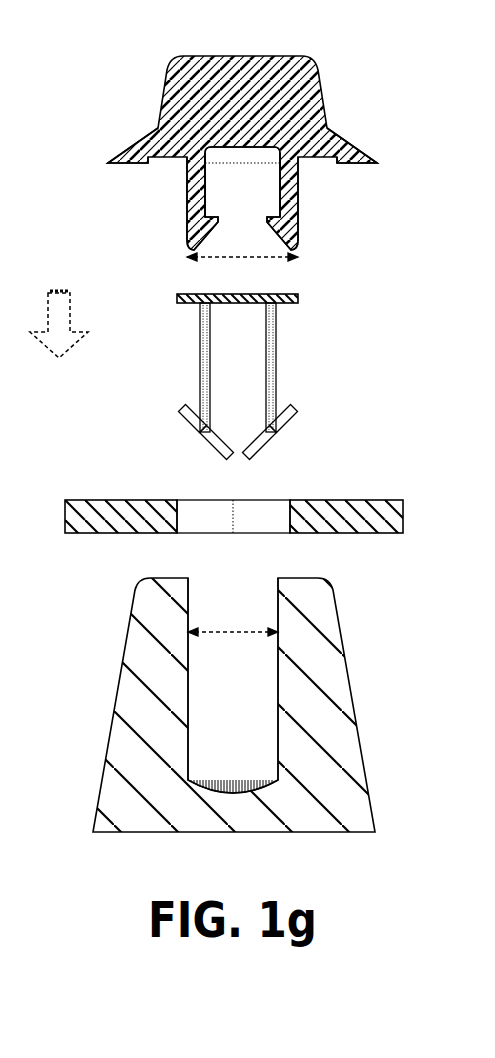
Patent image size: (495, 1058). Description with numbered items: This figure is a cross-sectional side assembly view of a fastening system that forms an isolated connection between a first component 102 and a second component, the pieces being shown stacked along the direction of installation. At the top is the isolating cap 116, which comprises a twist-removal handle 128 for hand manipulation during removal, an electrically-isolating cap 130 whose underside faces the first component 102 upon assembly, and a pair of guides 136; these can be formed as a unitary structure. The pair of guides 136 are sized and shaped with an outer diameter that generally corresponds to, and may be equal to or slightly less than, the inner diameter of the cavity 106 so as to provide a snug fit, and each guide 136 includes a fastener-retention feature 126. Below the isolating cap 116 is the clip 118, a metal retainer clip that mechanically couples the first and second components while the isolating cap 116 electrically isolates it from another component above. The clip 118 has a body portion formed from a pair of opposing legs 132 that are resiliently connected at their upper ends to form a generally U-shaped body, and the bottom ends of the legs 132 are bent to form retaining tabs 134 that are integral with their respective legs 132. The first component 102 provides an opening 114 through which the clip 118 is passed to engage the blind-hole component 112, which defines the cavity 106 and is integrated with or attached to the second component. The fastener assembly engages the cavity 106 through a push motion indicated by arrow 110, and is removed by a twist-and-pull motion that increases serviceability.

The first component 102 is at (234, 498).
The cavity 106 is at (235, 575).
The arrow 110 is at (73, 313).
The blind-hole component 112 is at (265, 687).
The opening 114 is at (238, 495).
The isolating cap 116 is at (276, 146).
The clip 118 is at (300, 372).
The fastener-retention feature 126 is at (267, 219).
The twist-removal handle 128 is at (322, 89).
The electrically-isolating cap 130 is at (136, 145).
The opposing legs 132 is at (199, 362).
The retaining tabs 134 is at (181, 413).
The pair of guides 136 is at (186, 190).